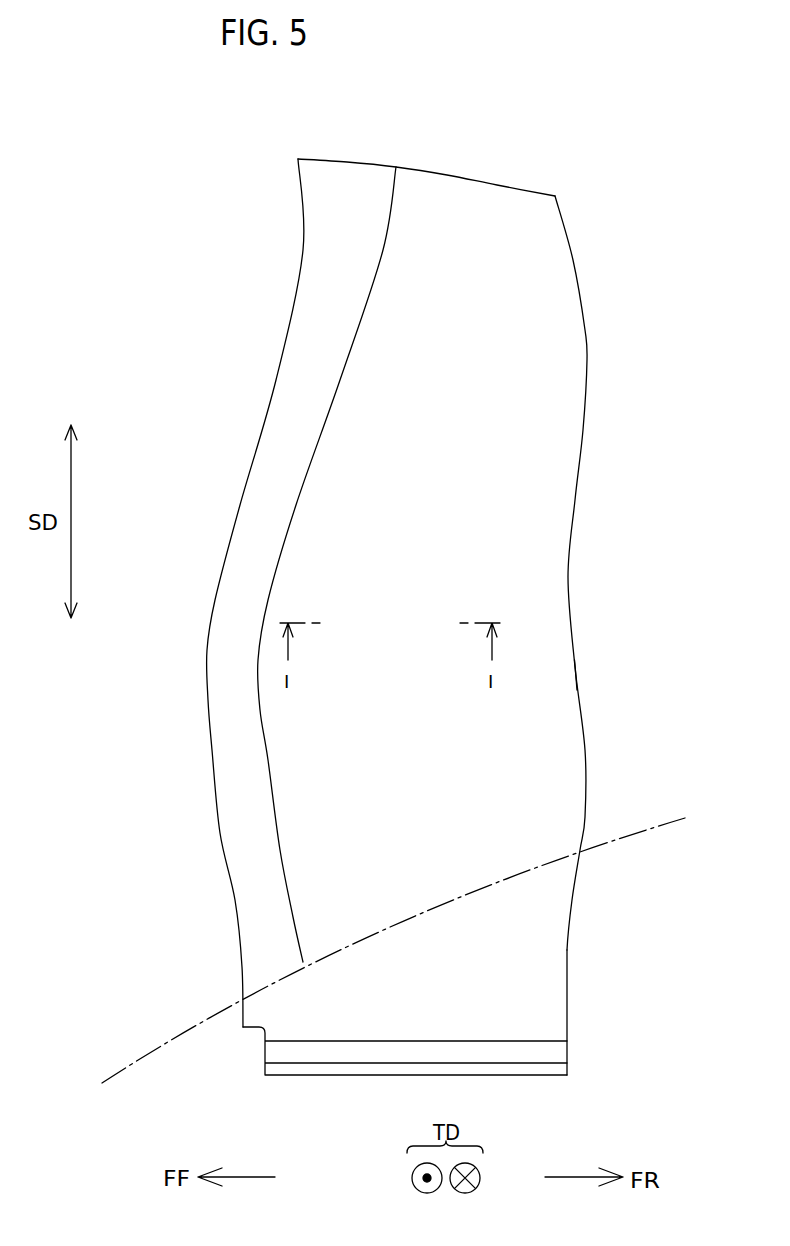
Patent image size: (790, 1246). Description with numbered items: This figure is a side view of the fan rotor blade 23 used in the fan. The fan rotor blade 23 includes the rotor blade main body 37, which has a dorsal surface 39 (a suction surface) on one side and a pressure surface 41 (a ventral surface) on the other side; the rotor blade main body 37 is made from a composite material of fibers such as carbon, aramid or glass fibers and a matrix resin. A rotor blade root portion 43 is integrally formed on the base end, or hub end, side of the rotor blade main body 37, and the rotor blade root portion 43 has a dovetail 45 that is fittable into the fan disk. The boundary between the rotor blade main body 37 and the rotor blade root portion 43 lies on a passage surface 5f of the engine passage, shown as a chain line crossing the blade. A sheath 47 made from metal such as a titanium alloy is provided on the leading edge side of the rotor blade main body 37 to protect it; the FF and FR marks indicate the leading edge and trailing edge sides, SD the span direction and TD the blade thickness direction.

The fan rotor blade 23 is at (484, 112).
The rotor blade main body 37 is at (591, 469).
The dorsal surface 39 is at (535, 575).
The pressure surface 41 is at (542, 660).
The rotor blade root portion 43 is at (578, 955).
The dovetail 45 is at (563, 1053).
The sheath 47 is at (265, 478).
The passage surface 5f is at (413, 913).